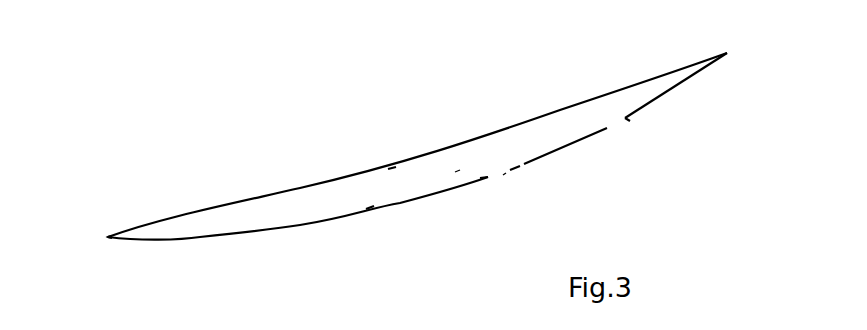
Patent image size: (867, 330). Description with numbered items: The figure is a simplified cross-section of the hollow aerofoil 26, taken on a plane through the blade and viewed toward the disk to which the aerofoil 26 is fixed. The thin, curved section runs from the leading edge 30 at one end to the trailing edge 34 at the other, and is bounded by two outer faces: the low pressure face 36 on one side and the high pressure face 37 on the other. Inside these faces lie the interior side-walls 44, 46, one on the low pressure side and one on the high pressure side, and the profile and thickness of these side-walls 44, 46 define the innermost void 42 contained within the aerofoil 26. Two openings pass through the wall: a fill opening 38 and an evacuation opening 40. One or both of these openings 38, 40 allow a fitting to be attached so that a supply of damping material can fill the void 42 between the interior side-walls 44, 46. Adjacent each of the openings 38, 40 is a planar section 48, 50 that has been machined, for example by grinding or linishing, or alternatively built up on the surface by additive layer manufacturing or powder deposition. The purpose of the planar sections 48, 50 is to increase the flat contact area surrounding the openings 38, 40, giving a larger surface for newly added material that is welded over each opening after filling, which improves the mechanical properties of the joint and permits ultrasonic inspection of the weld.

The aerofoil 26 is at (411, 175).
The leading edge 30 is at (101, 238).
The trailing edge 34 is at (727, 53).
The low pressure face 36 is at (403, 203).
The high pressure face 37 is at (325, 182).
The fill opening 38 is at (503, 175).
The evacuation opening 40 is at (615, 125).
The innermost void 42 is at (457, 170).
The interior side-wall 44 is at (370, 207).
The interior side-wall 46 is at (392, 168).
The planar section 48 is at (480, 178).
The planar section 50 is at (632, 120).